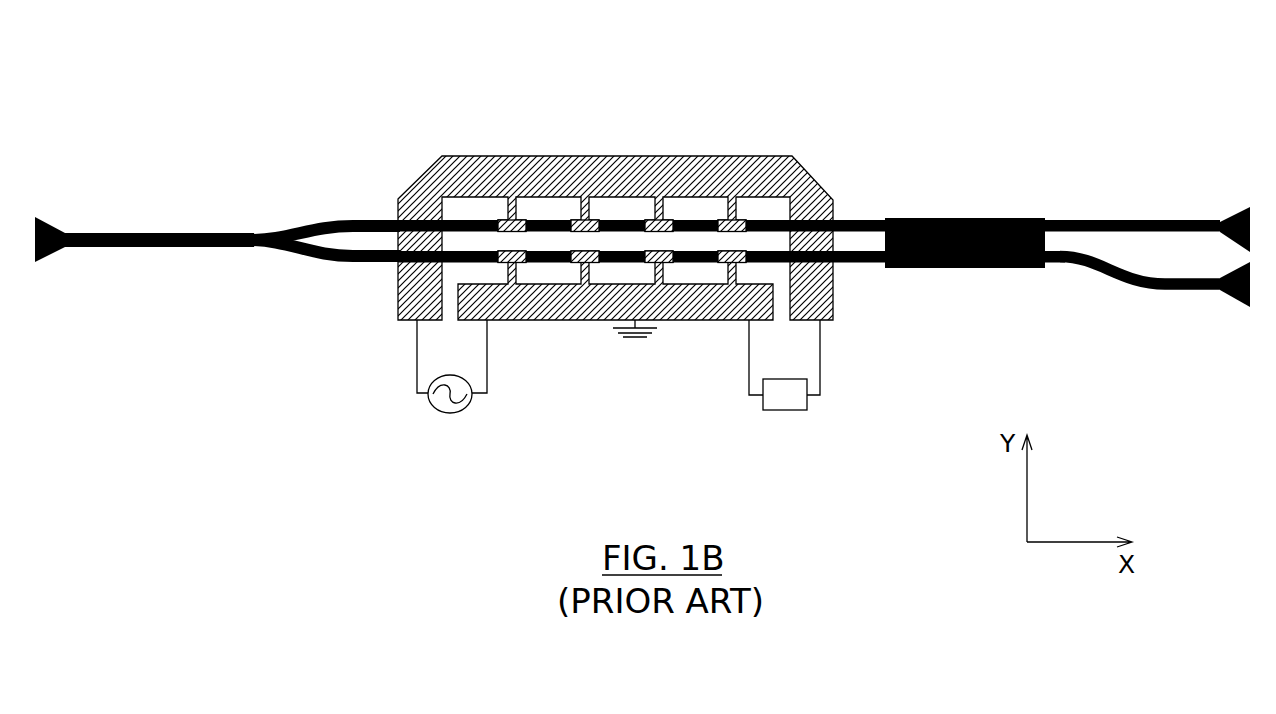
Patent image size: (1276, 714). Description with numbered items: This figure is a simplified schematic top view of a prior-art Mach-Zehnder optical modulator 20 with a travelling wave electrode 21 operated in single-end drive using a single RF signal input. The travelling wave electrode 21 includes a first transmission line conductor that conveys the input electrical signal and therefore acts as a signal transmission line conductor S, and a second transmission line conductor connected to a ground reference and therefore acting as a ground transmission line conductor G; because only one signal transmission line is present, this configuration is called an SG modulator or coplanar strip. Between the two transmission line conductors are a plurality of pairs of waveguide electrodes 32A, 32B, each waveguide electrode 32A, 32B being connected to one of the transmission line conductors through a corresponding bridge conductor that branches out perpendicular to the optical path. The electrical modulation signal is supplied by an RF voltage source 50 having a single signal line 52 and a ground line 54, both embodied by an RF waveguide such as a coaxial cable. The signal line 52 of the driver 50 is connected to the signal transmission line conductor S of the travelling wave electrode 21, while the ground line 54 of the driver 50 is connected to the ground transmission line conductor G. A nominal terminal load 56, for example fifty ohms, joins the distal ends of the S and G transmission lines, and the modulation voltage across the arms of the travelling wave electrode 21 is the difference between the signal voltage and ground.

The modulator 20 is at (642, 208).
The travelling wave electrode 21 is at (653, 207).
The signal transmission line conductor S is at (653, 156).
The ground transmission line conductor G is at (567, 321).
The waveguide electrode 32A is at (745, 221).
The waveguide electrode 32B is at (724, 263).
The RF voltage source 50 is at (439, 401).
The signal line 52 is at (417, 357).
The ground line 54 is at (488, 370).
The nominal terminal load 56 is at (807, 402).